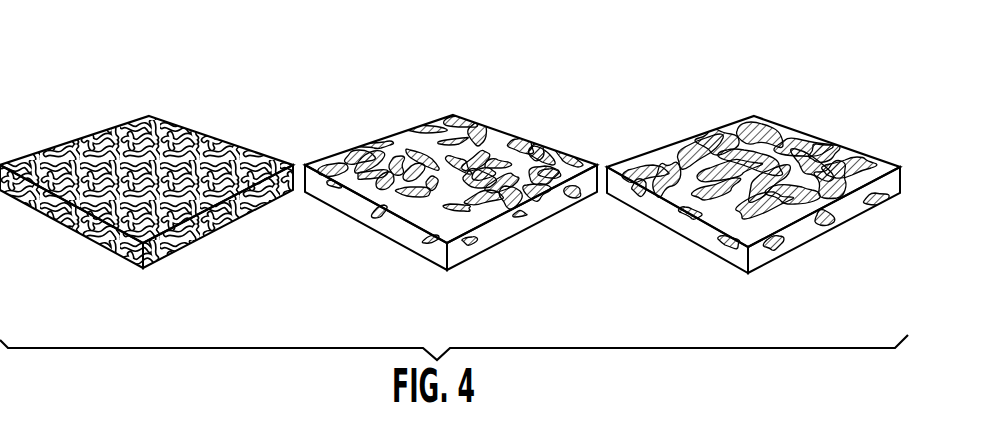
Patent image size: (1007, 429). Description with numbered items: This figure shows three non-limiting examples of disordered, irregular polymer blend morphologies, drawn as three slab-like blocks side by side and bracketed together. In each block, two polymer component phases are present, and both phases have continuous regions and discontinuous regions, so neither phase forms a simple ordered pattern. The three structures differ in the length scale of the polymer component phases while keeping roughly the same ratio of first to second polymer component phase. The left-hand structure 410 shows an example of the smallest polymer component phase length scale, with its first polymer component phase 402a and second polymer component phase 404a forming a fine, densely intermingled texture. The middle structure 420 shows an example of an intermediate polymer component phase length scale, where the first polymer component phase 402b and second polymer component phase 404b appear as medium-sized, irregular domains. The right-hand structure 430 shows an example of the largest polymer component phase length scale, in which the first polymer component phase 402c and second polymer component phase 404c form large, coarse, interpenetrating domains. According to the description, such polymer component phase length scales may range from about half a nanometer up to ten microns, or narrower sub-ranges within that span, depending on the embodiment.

The structure 410 is at (146, 178).
The structure 420 is at (451, 177).
The structure 430 is at (753, 176).
The polymer component phase 402a is at (143, 270).
The polymer component phase 404a is at (172, 258).
The polymer component phase 402b is at (433, 204).
The polymer component phase 404b is at (488, 217).
The polymer component phase 402c is at (738, 234).
The polymer component phase 404c is at (796, 247).